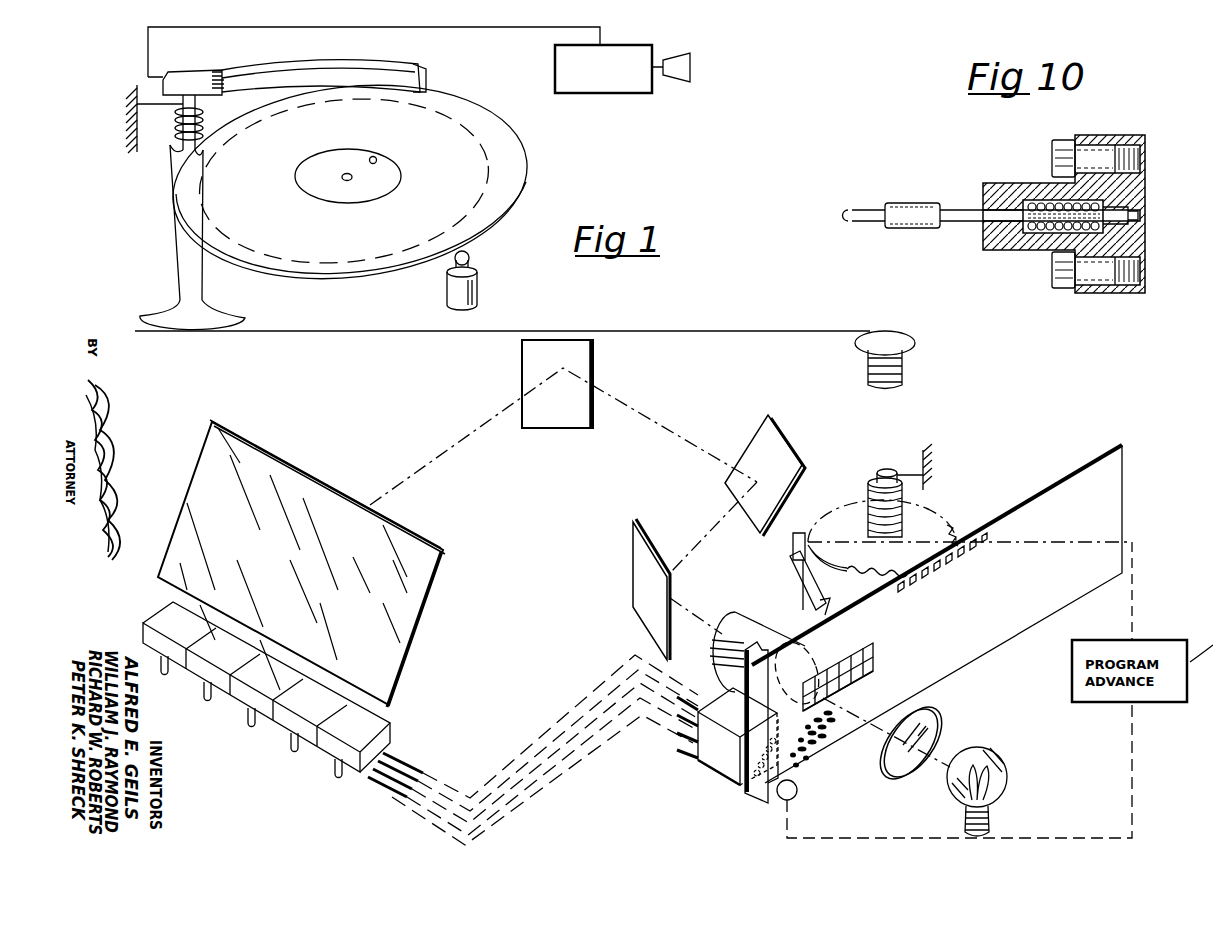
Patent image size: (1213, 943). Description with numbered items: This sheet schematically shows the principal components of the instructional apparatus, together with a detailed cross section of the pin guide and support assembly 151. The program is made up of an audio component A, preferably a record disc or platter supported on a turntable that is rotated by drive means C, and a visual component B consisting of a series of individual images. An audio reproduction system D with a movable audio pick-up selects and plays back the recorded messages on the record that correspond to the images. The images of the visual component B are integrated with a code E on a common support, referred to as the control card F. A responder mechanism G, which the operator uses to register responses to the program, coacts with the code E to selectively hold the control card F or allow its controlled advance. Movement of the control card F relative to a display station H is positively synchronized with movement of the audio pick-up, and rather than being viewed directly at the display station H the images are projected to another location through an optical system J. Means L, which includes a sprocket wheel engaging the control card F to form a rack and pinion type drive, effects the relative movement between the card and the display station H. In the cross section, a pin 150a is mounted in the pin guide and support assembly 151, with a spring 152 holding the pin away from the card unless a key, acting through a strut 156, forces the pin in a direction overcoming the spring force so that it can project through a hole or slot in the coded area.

In FIG. 1, the audio component A is at (514, 135).
In FIG. 1, the visual component B is at (868, 676).
In FIG. 1, the drive means C is at (477, 294).
In FIG. 1, the audio reproduction system D is at (555, 64).
In FIG. 1, the code E is at (807, 745).
In FIG. 1, the control card F is at (1055, 482).
In FIG. 1, the responder mechanism G is at (614, 654).
In FIG. 1, the display station H is at (835, 698).
In FIG. 1, the optical system J is at (708, 450).
In FIG. 1, the means for effecting relative movement L is at (947, 525).
In FIG. 10, the pin 150a is at (1123, 212).
In FIG. 10, the pin guide and support assembly 151 is at (1121, 144).
In FIG. 10, the spring 152 is at (1040, 233).
In FIG. 10, the strut 156 is at (862, 210).